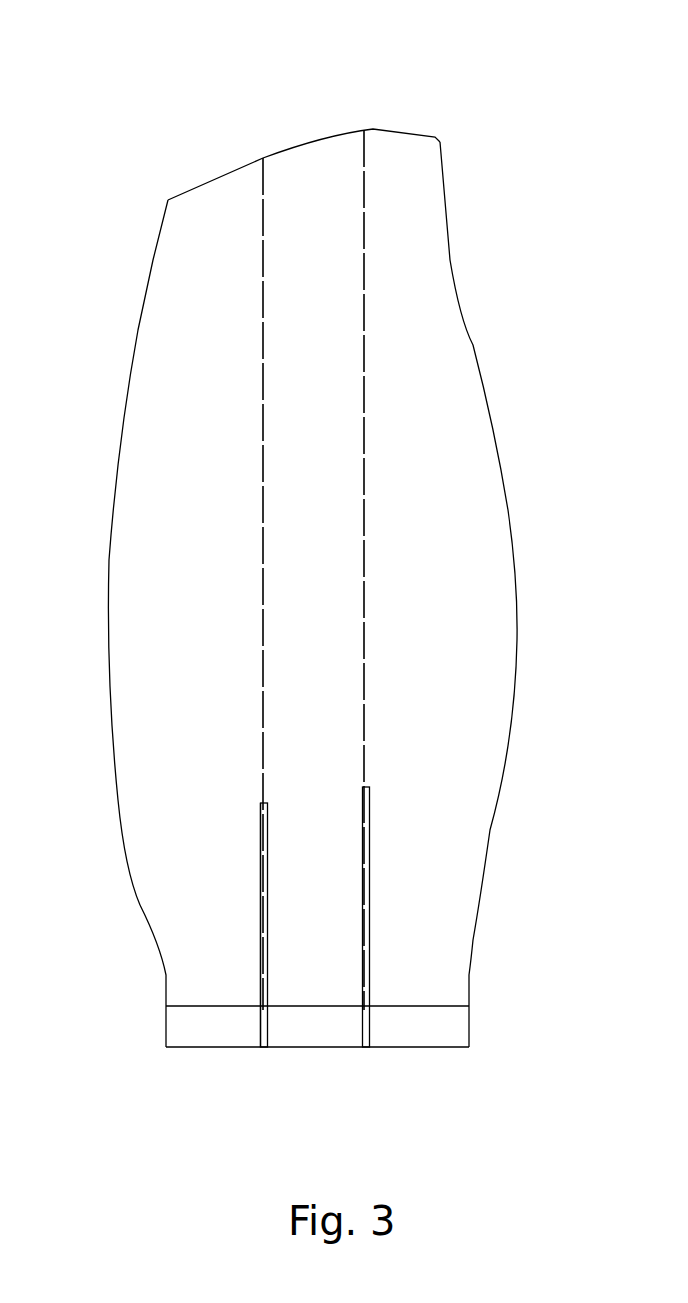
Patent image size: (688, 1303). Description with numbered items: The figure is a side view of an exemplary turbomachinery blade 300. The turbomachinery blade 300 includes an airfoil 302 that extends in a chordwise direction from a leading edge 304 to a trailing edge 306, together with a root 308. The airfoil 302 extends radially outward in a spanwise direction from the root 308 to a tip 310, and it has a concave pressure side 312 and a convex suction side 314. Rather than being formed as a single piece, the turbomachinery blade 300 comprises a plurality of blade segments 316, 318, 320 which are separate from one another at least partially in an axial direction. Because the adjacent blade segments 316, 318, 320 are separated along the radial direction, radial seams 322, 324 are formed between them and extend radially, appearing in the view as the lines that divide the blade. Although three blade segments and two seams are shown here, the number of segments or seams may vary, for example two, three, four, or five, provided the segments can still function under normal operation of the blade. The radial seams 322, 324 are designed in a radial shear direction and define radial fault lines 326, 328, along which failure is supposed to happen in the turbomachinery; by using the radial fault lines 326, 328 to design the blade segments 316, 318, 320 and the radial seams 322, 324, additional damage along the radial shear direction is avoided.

The turbomachinery blade 300 is at (513, 47).
The airfoil 302 is at (135, 707).
The leading edge 304 is at (479, 337).
The trailing edge 306 is at (126, 306).
The root 308 is at (442, 1048).
The tip 310 is at (372, 128).
The concave pressure side 312 is at (483, 673).
The convex suction side 314 is at (430, 650).
The blade segment 316 is at (182, 988).
The blade segment 318 is at (288, 943).
The blade segment 320 is at (453, 957).
The radial seam 322 is at (265, 1050).
The radial seam 324 is at (367, 1050).
The radial fault line 326 is at (260, 230).
The radial fault line 328 is at (367, 227).